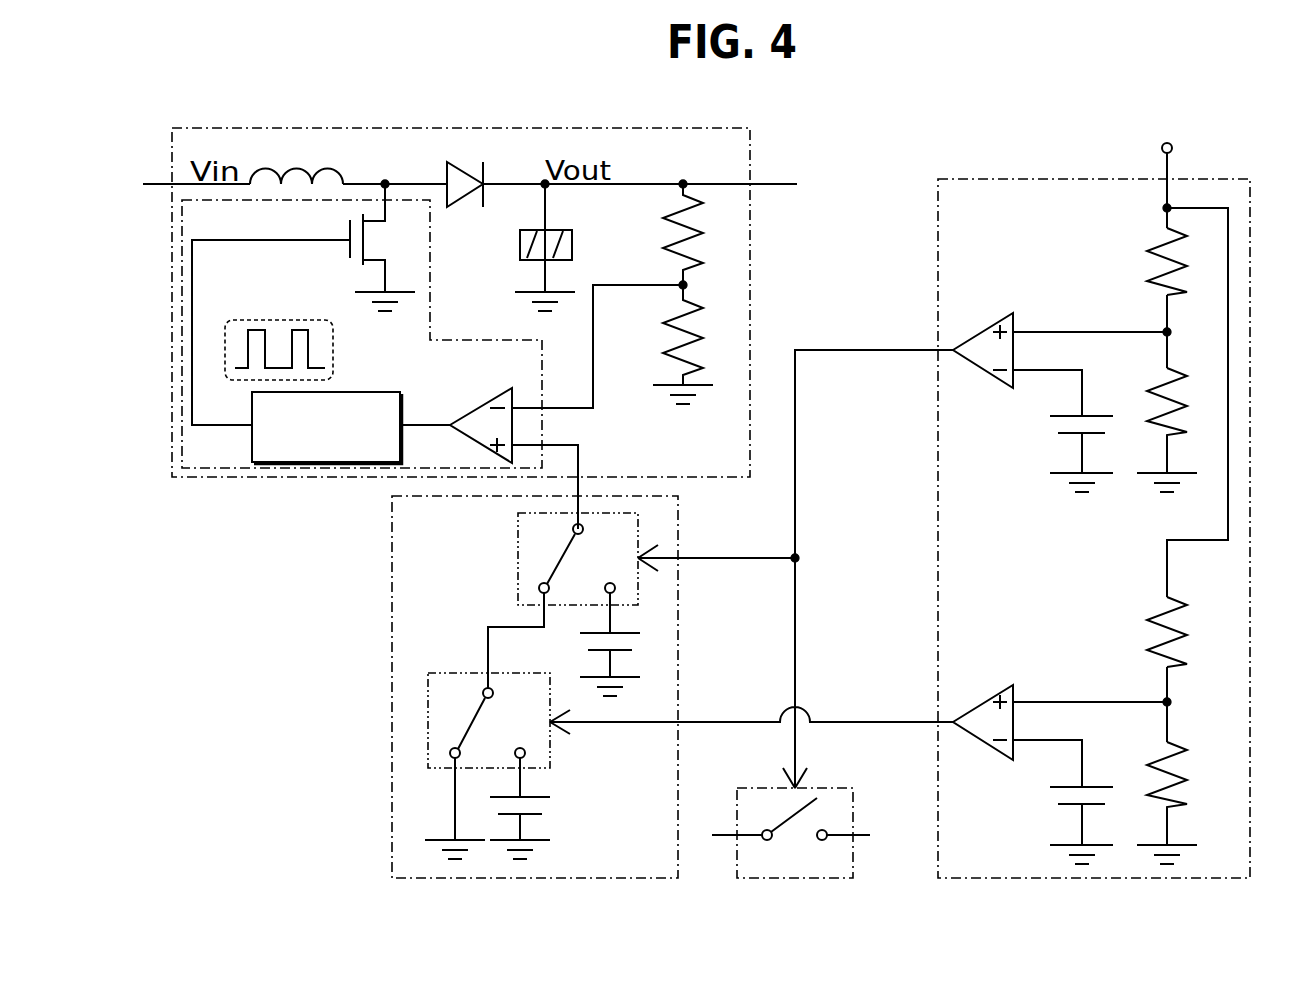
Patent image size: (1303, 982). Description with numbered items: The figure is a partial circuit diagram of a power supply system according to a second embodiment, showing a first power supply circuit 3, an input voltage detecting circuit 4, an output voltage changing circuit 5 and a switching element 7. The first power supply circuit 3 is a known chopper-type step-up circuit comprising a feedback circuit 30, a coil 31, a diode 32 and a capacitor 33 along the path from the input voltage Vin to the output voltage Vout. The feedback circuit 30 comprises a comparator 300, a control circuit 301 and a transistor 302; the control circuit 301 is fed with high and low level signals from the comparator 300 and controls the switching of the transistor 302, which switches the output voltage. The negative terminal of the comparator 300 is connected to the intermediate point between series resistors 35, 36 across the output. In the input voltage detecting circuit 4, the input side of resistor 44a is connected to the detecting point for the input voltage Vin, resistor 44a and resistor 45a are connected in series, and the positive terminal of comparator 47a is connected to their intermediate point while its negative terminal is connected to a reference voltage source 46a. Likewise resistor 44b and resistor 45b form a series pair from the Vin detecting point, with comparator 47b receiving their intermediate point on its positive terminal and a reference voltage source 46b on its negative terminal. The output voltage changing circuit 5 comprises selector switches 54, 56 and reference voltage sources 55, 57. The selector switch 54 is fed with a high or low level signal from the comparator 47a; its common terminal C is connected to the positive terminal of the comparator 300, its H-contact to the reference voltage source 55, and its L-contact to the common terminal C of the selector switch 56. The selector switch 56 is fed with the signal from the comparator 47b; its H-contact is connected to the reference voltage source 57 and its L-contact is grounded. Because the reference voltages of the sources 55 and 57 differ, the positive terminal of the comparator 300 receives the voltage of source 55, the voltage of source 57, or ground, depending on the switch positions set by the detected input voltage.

The first power supply circuit 3 is at (383, 128).
The feedback circuit 30 is at (430, 270).
The coil 31 is at (343, 176).
The diode 32 is at (467, 168).
The capacitor 33 is at (560, 230).
The resistor 35 is at (692, 206).
The resistor 36 is at (693, 316).
The comparator 300 is at (477, 405).
The control circuit 301 is at (350, 392).
The transistor 302 is at (279, 320).
The input voltage detecting circuit 4 is at (1195, 878).
The resistor 44a is at (1162, 235).
The resistor 44b is at (1162, 603).
The resistor 45a is at (1162, 370).
The resistor 45b is at (1162, 742).
The reference voltage source 46a is at (1092, 437).
The reference voltage source 46b is at (1092, 808).
The comparator 47a is at (985, 343).
The comparator 47b is at (985, 715).
The output voltage changing circuit 5 is at (628, 878).
The selector switch 54 is at (518, 550).
The reference voltage source 55 is at (622, 633).
The selector switch 56 is at (470, 673).
The reference voltage source 57 is at (538, 797).
The switching element 7 is at (735, 815).